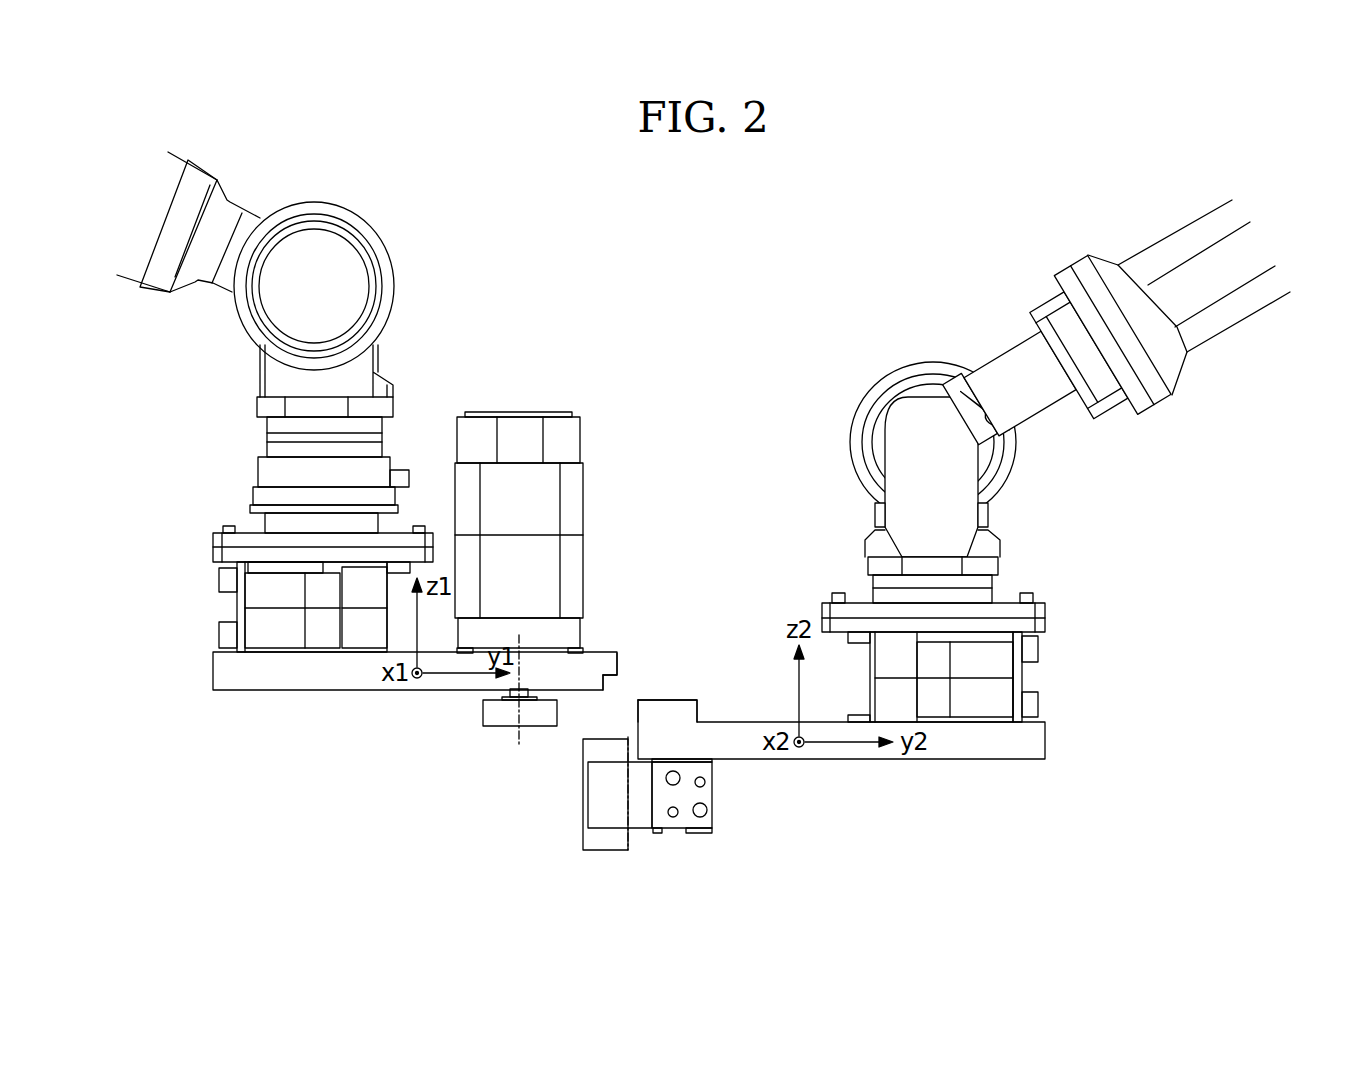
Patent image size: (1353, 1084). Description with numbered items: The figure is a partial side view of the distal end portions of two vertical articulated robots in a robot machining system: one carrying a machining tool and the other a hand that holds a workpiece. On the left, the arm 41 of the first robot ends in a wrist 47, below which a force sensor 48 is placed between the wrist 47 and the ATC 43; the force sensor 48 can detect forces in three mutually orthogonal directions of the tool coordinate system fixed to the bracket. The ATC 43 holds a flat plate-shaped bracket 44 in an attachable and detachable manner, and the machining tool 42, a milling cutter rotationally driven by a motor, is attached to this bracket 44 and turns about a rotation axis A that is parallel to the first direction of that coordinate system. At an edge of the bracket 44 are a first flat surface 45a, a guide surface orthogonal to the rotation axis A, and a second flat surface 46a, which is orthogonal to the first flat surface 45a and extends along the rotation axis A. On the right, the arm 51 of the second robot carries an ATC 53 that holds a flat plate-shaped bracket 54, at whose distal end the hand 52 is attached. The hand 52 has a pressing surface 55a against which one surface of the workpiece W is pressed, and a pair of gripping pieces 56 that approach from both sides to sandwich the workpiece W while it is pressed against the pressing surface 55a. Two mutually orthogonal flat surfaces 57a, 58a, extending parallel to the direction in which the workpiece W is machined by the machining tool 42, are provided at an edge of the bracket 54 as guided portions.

The arm 41 is at (175, 150).
The machining tool 42 is at (483, 712).
The ATC 43 is at (200, 614).
The bracket 44 is at (300, 698).
The first flat surface 45a is at (618, 688).
The second flat surface 46a is at (606, 690).
The wrist 47 is at (393, 407).
The force sensor 48 is at (257, 472).
The arm 51 is at (1183, 242).
The hand 52 is at (680, 850).
The ATC 53 is at (1055, 672).
The bracket 54 is at (957, 760).
The pressing surface 55a is at (628, 850).
The gripping pieces 56 is at (644, 818).
The flat surface 57a is at (675, 698).
The flat surface 58a is at (627, 704).
The workpiece W is at (584, 795).
The rotation axis A is at (514, 736).